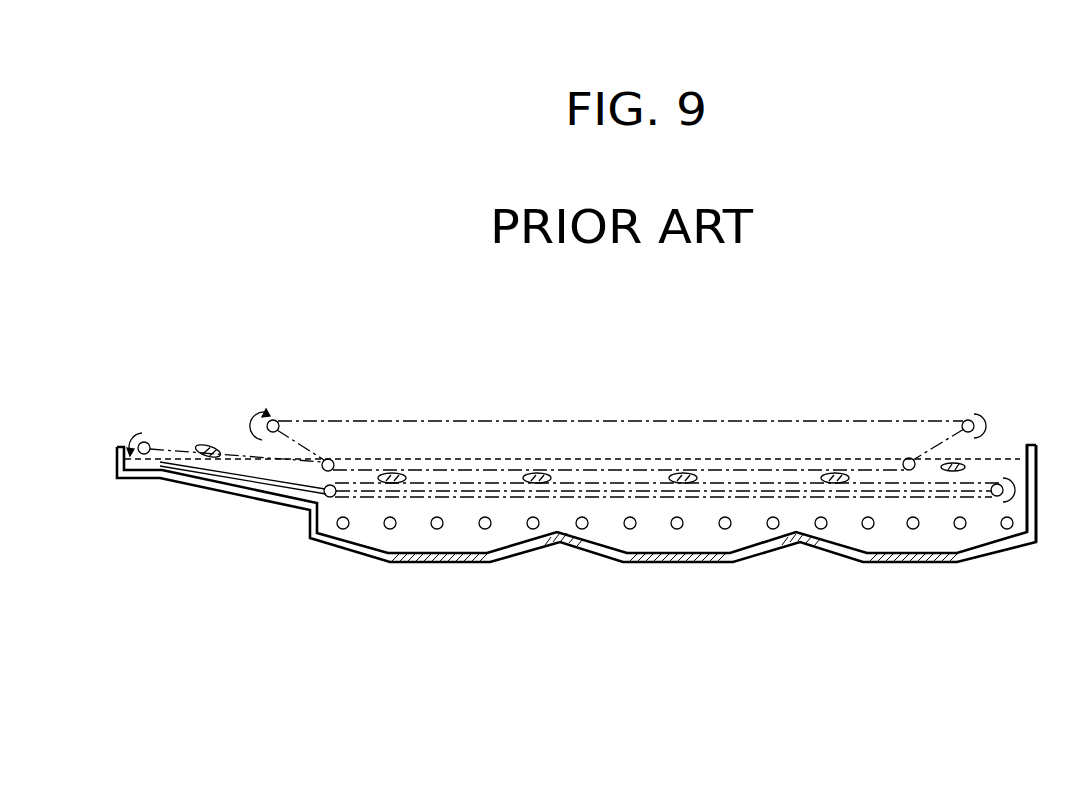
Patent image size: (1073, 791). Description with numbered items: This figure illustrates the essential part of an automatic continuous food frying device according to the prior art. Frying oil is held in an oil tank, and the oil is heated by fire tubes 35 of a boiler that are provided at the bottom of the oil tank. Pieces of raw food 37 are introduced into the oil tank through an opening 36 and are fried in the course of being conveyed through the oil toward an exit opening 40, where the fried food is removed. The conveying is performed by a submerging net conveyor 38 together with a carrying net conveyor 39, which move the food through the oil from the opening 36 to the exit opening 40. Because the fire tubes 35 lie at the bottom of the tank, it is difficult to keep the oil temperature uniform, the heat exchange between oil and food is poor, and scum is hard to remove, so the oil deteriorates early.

The fire tubes 35 is at (343, 530).
The opening 36 is at (1003, 441).
The pieces of raw food 37 is at (203, 446).
The submerging net conveyor 38 is at (477, 420).
The carrying net conveyor 39 is at (237, 459).
The exit opening 40 is at (167, 423).